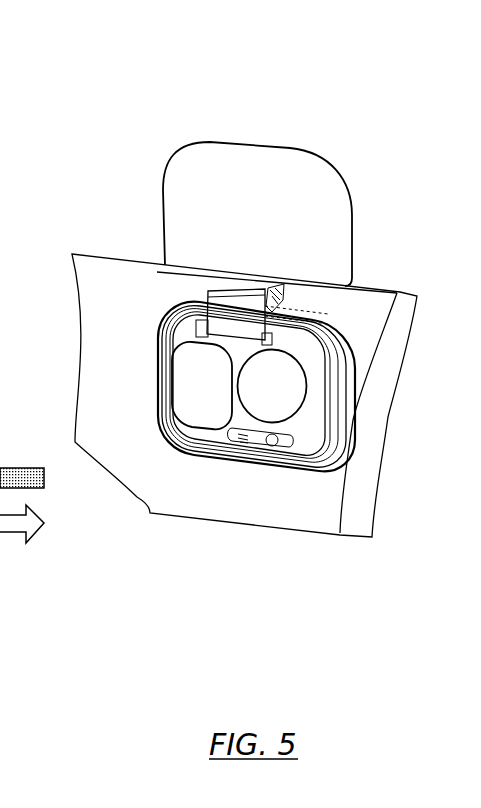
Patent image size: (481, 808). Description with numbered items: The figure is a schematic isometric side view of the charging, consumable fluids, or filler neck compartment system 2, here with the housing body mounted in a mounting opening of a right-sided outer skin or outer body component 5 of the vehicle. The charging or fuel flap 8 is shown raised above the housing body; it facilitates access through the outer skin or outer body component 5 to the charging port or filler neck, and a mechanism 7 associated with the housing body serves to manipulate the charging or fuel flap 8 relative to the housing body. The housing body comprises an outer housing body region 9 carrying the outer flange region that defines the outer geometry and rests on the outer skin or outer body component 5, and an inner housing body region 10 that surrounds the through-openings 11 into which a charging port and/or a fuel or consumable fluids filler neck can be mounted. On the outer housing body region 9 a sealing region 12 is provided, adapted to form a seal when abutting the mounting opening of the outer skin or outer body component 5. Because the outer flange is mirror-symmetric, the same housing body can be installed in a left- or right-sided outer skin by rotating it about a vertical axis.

The charging, consumable fluids, or filler neck compartment system 2 is at (196, 86).
The outer skin or outer body component 5 is at (100, 325).
The mechanism for manipulating the charging or fuel flap 7 is at (228, 320).
The charging or fuel flap 8 is at (193, 236).
The outer housing body region 9 is at (338, 448).
The inner housing body region 10 is at (238, 412).
The through-opening 11 is at (208, 382).
The sealing region 12 is at (338, 448).